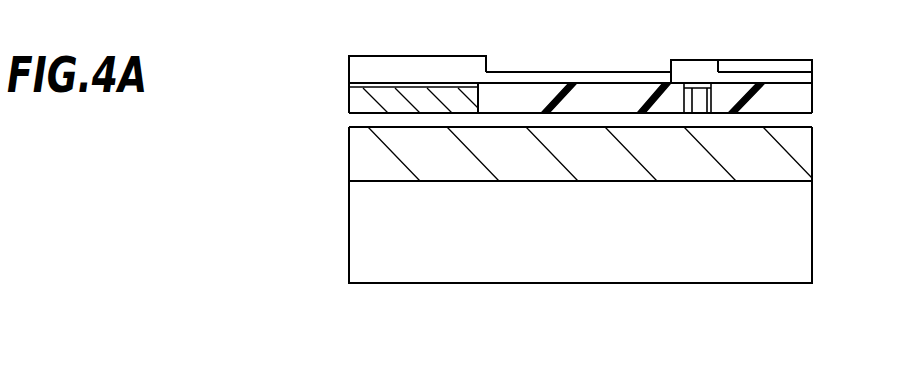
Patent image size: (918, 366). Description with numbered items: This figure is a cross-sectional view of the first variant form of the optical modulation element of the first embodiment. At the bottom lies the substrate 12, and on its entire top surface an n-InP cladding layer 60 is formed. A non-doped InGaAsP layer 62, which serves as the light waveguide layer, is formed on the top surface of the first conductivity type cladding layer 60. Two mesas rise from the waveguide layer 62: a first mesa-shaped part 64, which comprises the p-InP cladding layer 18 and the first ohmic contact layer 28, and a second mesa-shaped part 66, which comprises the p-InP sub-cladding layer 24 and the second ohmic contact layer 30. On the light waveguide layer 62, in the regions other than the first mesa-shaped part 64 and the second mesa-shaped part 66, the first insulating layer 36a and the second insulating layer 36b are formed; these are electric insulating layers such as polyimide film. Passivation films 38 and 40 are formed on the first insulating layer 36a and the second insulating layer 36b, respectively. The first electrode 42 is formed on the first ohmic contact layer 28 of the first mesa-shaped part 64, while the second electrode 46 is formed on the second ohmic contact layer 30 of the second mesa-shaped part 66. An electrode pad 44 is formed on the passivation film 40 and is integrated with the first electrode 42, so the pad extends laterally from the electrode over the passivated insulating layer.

The substrate 12 is at (807, 222).
The p-InP cladding layer 18 is at (701, 100).
The p-InP sub-cladding layer 24 is at (415, 100).
The first ohmic contact layer 28 is at (687, 88).
The second ohmic contact layer 30 is at (393, 89).
The first insulating layer 36a is at (520, 105).
The second insulating layer 36b is at (812, 103).
The passivation film 38 is at (550, 75).
The passivation film 40 is at (812, 78).
The first electrode 42 is at (671, 54).
The electrode pad 44 is at (720, 54).
The second electrode 46 is at (349, 72).
The n-InP cladding layer 60 is at (812, 168).
The non-doped InGaAsP layer 62 is at (812, 124).
The first mesa-shaped part 64 is at (663, 318).
The second mesa-shaped part 66 is at (452, 318).